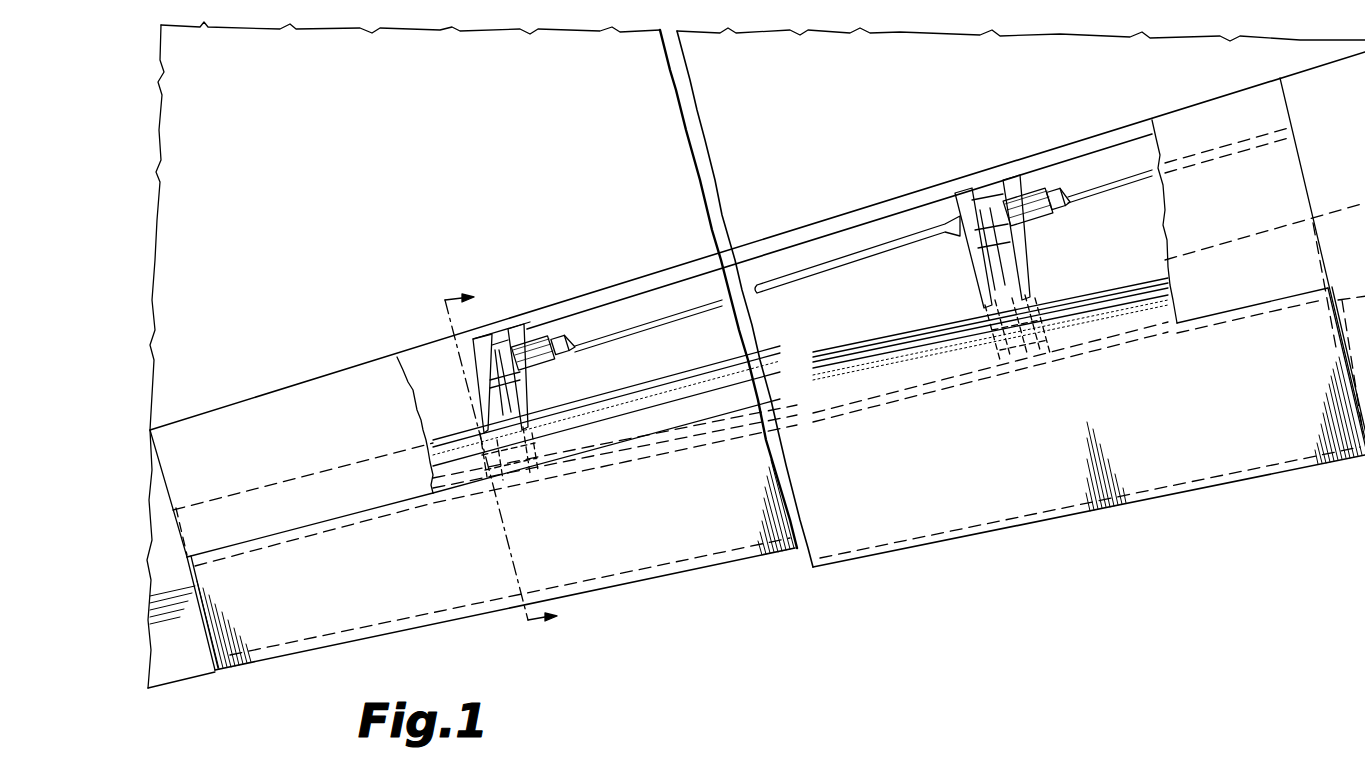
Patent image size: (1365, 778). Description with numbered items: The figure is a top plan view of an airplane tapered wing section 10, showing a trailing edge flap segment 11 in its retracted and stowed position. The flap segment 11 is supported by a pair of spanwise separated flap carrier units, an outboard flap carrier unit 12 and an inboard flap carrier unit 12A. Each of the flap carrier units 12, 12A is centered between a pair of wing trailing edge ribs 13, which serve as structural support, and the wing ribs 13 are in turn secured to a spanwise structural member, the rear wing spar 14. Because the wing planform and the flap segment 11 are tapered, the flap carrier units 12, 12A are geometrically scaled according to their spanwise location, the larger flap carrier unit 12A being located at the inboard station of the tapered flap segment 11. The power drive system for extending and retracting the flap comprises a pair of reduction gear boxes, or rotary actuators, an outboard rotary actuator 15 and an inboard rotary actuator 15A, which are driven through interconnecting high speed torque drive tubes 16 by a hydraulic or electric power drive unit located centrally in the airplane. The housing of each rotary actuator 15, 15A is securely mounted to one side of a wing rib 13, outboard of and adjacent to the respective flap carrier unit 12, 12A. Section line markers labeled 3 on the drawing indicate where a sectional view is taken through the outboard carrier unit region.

The tapered wing section 10 is at (388, 190).
The trailing edge flap segment 11 is at (628, 541).
The outboard flap carrier unit 12 is at (552, 420).
The inboard flap carrier unit 12A is at (978, 336).
The wing trailing edge ribs 13 is at (507, 340).
The rear wing spar 14 is at (745, 243).
The outboard rotary actuator 15 is at (533, 343).
The inboard rotary actuator 15A is at (1030, 186).
The torque drive tubes 16 is at (646, 330).
The section line 3- 3 is at (481, 470).